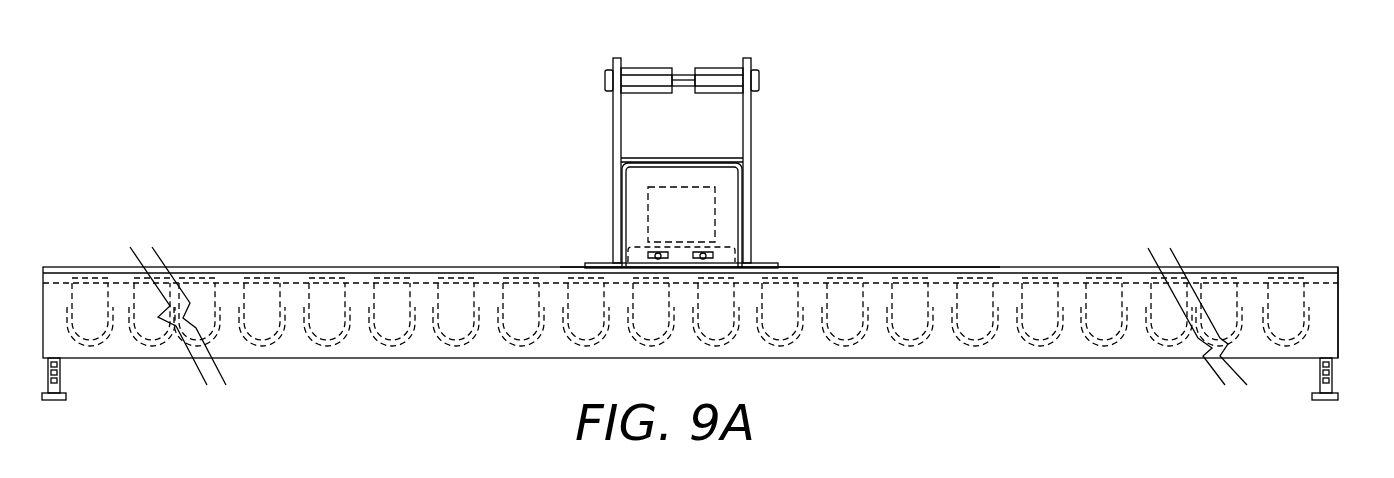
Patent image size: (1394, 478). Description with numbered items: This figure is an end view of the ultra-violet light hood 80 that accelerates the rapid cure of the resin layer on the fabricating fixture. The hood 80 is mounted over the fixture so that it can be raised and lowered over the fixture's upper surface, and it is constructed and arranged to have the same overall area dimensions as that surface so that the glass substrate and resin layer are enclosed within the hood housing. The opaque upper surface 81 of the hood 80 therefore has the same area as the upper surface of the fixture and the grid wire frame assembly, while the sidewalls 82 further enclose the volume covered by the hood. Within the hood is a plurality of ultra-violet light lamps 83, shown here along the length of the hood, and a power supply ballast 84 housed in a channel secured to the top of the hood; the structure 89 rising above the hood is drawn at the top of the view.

The ultra-violet light hood 80 is at (340, 267).
The opaque upper surface 81 is at (872, 268).
The sidewalls 82 is at (1340, 290).
The ultra-violet light lamps 83 is at (1022, 348).
The power supply ballast 84 is at (715, 216).
The frame 89 is at (751, 140).